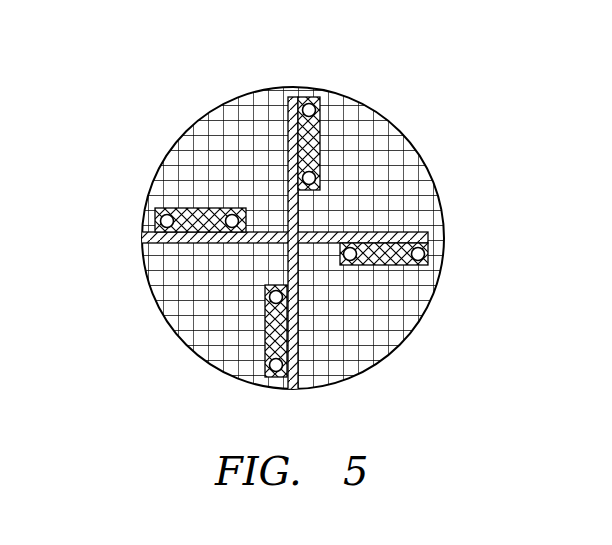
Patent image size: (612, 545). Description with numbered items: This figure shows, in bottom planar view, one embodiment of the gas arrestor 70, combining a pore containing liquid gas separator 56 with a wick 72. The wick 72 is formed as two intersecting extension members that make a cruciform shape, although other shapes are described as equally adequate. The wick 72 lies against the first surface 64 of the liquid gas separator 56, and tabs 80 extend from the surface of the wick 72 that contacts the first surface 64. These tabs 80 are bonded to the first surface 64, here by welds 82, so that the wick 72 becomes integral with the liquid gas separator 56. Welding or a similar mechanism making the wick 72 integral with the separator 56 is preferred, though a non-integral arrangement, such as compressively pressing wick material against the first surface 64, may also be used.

The gas arrestor 70 is at (289, 221).
The liquid gas separator 56 is at (400, 130).
The wick 72 is at (410, 231).
The welds 82 is at (420, 255).
The first surface 64 is at (380, 323).
The tabs 80 is at (268, 333).